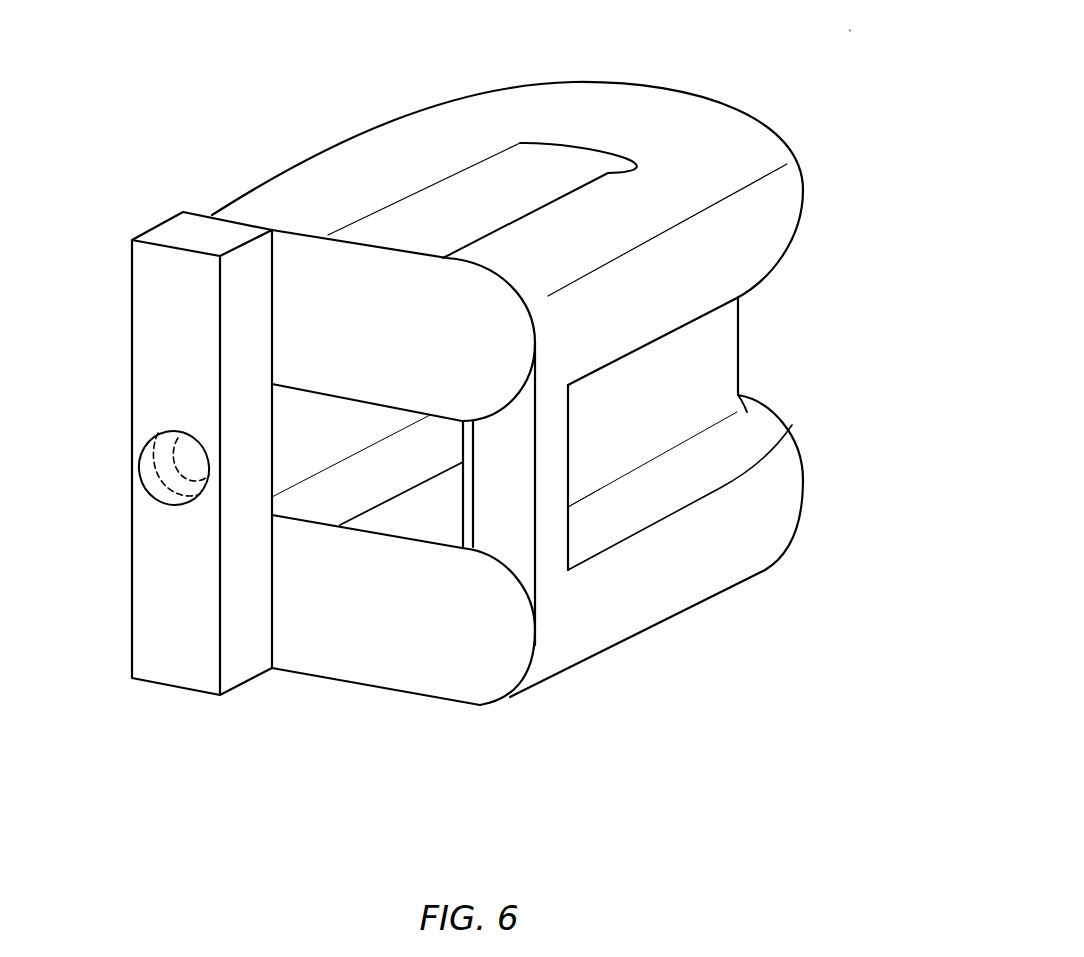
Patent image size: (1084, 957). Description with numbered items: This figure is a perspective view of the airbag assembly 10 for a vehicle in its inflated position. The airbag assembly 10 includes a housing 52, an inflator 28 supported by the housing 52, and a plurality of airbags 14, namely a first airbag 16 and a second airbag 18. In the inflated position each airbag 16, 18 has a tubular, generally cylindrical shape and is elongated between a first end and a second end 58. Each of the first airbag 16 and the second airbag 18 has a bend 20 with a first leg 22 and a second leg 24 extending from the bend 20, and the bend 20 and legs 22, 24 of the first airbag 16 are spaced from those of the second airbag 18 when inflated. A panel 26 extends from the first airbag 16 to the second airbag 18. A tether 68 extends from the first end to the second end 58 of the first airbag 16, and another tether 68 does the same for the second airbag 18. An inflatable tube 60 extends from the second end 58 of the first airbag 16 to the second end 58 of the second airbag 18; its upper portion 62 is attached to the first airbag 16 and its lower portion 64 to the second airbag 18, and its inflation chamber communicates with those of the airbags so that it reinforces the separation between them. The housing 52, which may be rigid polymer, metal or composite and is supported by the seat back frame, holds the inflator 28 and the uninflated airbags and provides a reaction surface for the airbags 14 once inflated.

The airbag assembly 10 is at (843, 22).
The airbags 14 is at (807, 302).
The first airbag 16 is at (838, 187).
The second airbag 18 is at (805, 588).
The bend 20 is at (712, 43).
The first leg 22 is at (305, 195).
The second leg 24 is at (663, 362).
The panel 26 is at (768, 345).
The inflator 28 is at (139, 467).
The housing 52 is at (155, 333).
The second end 58 is at (523, 407).
The inflatable tube 60 is at (645, 492).
The upper portion 62 is at (597, 443).
The lower portion 64 is at (597, 518).
The tether 68 is at (395, 290).